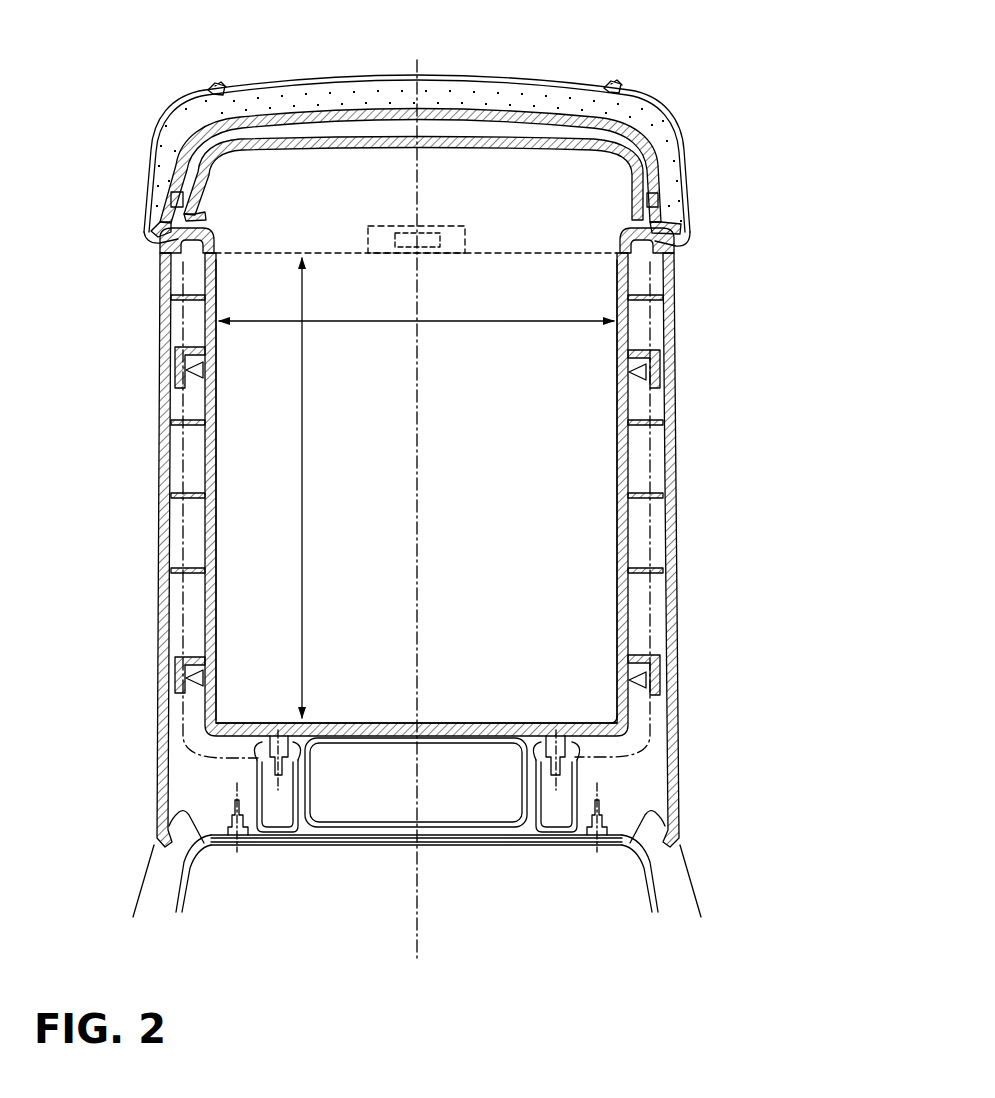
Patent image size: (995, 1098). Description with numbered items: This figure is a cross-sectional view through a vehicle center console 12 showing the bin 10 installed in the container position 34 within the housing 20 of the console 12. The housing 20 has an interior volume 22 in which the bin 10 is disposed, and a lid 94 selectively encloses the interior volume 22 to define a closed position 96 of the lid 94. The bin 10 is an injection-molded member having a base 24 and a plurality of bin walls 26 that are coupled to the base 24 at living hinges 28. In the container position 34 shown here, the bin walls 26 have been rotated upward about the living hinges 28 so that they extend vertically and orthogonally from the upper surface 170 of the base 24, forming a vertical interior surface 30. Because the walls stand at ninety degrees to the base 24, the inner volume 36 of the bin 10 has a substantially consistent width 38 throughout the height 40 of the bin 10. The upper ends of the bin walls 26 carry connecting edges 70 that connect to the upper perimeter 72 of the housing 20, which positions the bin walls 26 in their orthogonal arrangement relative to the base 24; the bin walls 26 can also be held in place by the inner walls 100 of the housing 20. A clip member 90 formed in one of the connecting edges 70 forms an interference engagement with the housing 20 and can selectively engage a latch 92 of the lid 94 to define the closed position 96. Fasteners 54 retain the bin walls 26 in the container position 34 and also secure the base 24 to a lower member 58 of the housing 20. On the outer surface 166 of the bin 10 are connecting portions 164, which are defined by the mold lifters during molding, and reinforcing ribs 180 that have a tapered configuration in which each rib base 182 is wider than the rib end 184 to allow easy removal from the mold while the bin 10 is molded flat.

The bin 10 is at (632, 283).
The console 12 is at (411, 550).
The housing 20 is at (640, 566).
The interior volume 22 is at (186, 758).
The base 24 is at (485, 738).
The bin walls 26 is at (635, 434).
The living hinges 28 is at (642, 736).
The interior surface 30 is at (230, 455).
The container position 34 is at (632, 341).
The inner volume 36 is at (505, 282).
The width 38 is at (447, 325).
The height 40 is at (309, 552).
The fasteners 54 is at (640, 370).
The lower member 58 is at (290, 745).
The connecting edges 70 is at (160, 240).
The upper perimeter 72 is at (200, 243).
The clip member 90 is at (385, 224).
The latch 92 is at (437, 224).
The lid 94 is at (567, 85).
The closed position 96 is at (401, 133).
The inner walls 100 is at (185, 622).
The connecting portions 164 is at (200, 347).
The outer surface 166 is at (640, 512).
The upper surface 170 is at (345, 722).
The reinforcing ribs 180 is at (195, 485).
The rib base 182 is at (640, 495).
The end 184 is at (640, 577).